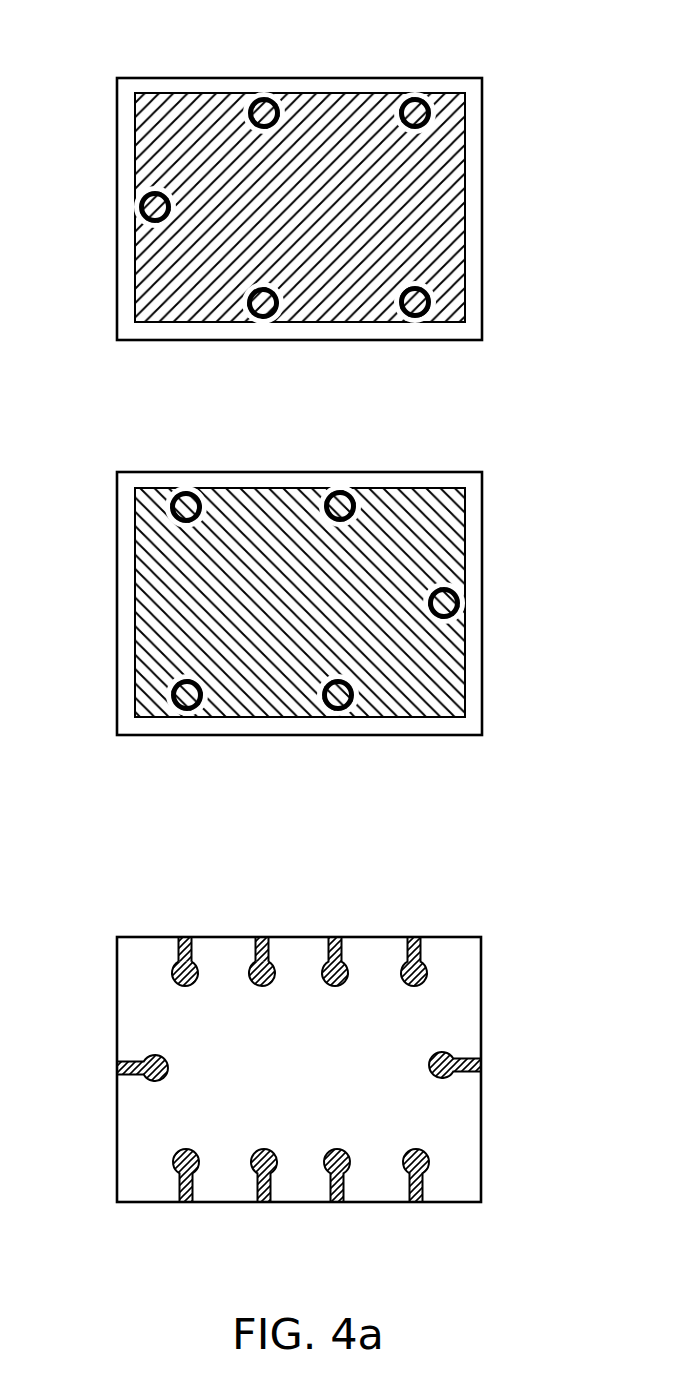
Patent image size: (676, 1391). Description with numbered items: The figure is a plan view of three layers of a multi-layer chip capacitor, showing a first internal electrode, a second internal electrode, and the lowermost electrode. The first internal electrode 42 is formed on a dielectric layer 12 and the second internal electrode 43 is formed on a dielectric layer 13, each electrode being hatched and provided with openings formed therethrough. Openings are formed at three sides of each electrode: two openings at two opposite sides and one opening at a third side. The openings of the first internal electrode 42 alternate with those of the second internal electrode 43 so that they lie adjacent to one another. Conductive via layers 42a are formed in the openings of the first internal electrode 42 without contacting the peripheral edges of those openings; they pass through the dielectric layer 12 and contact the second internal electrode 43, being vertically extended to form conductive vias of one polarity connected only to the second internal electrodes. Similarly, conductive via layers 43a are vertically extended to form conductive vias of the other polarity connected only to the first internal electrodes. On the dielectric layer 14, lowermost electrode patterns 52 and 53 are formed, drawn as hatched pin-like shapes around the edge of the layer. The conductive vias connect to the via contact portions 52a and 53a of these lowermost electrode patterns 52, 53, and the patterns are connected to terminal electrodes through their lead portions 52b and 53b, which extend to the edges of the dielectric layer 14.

The dielectric layer 12 is at (305, 174).
The first internal electrode 42 is at (167, 158).
The conductive via layers 42a is at (264, 99).
The dielectric layer 13 is at (304, 569).
The second internal electrode 43 is at (152, 618).
The conductive via layers 43a is at (188, 502).
The dielectric layer 14 is at (458, 1005).
The lowermost electrode pattern 52 is at (319, 1039).
The via contact portion 52a is at (171, 971).
The lead portion 52b is at (178, 939).
The lowermost electrode pattern 53 is at (297, 1044).
The via contact portion 53a is at (278, 970).
The lead portion 53b is at (251, 962).